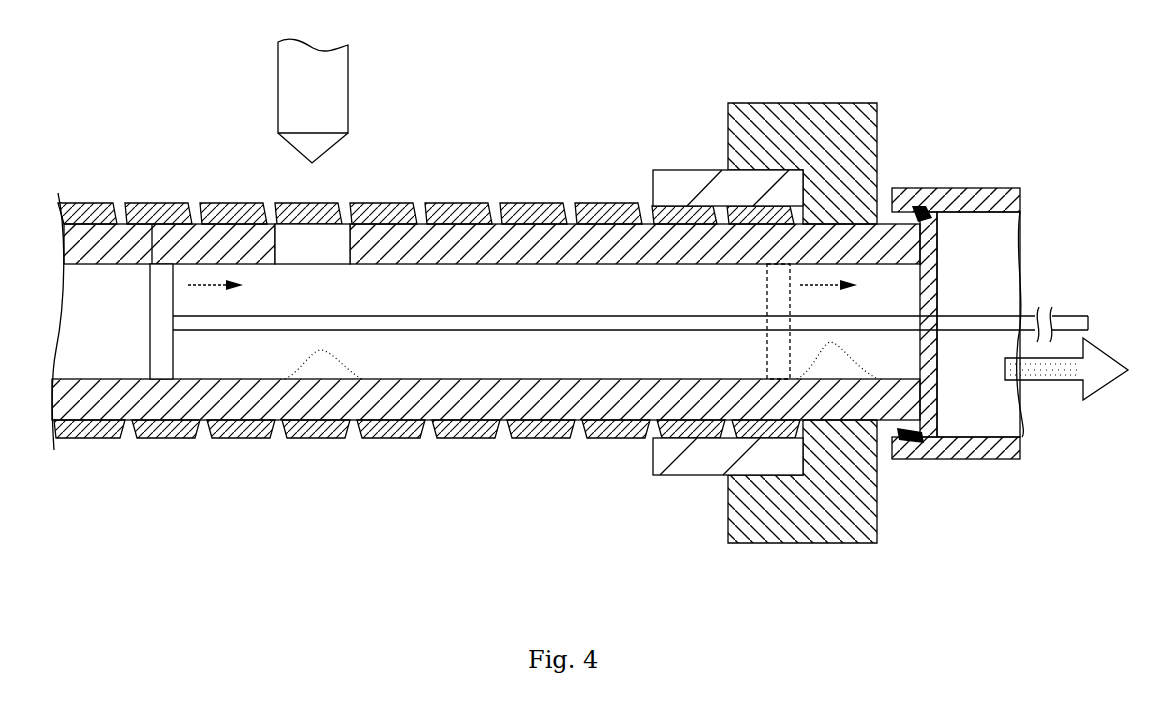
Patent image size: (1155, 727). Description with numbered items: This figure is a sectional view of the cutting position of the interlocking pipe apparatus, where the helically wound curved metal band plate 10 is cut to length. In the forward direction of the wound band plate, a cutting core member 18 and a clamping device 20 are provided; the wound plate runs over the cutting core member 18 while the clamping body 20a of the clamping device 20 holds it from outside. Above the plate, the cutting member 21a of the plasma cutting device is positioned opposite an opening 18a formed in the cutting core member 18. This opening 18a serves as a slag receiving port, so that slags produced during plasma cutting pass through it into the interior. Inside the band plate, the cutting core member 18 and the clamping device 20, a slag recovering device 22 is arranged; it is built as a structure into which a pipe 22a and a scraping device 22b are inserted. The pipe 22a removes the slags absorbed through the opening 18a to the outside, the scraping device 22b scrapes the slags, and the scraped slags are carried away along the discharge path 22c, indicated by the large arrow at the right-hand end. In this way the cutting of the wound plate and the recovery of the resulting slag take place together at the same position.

The metal band plate for interlocking pipe 10 is at (452, 201).
The cutting core member 18 is at (158, 220).
The opening of core member 18a is at (294, 243).
The cutting member 21a is at (325, 105).
The clamping device 20 is at (784, 100).
The clamping body 20a is at (686, 168).
The slag recovering device 22 is at (1006, 292).
The pipe 22a is at (977, 188).
The scraping device 22b is at (977, 315).
The discharge path 22c is at (1084, 422).